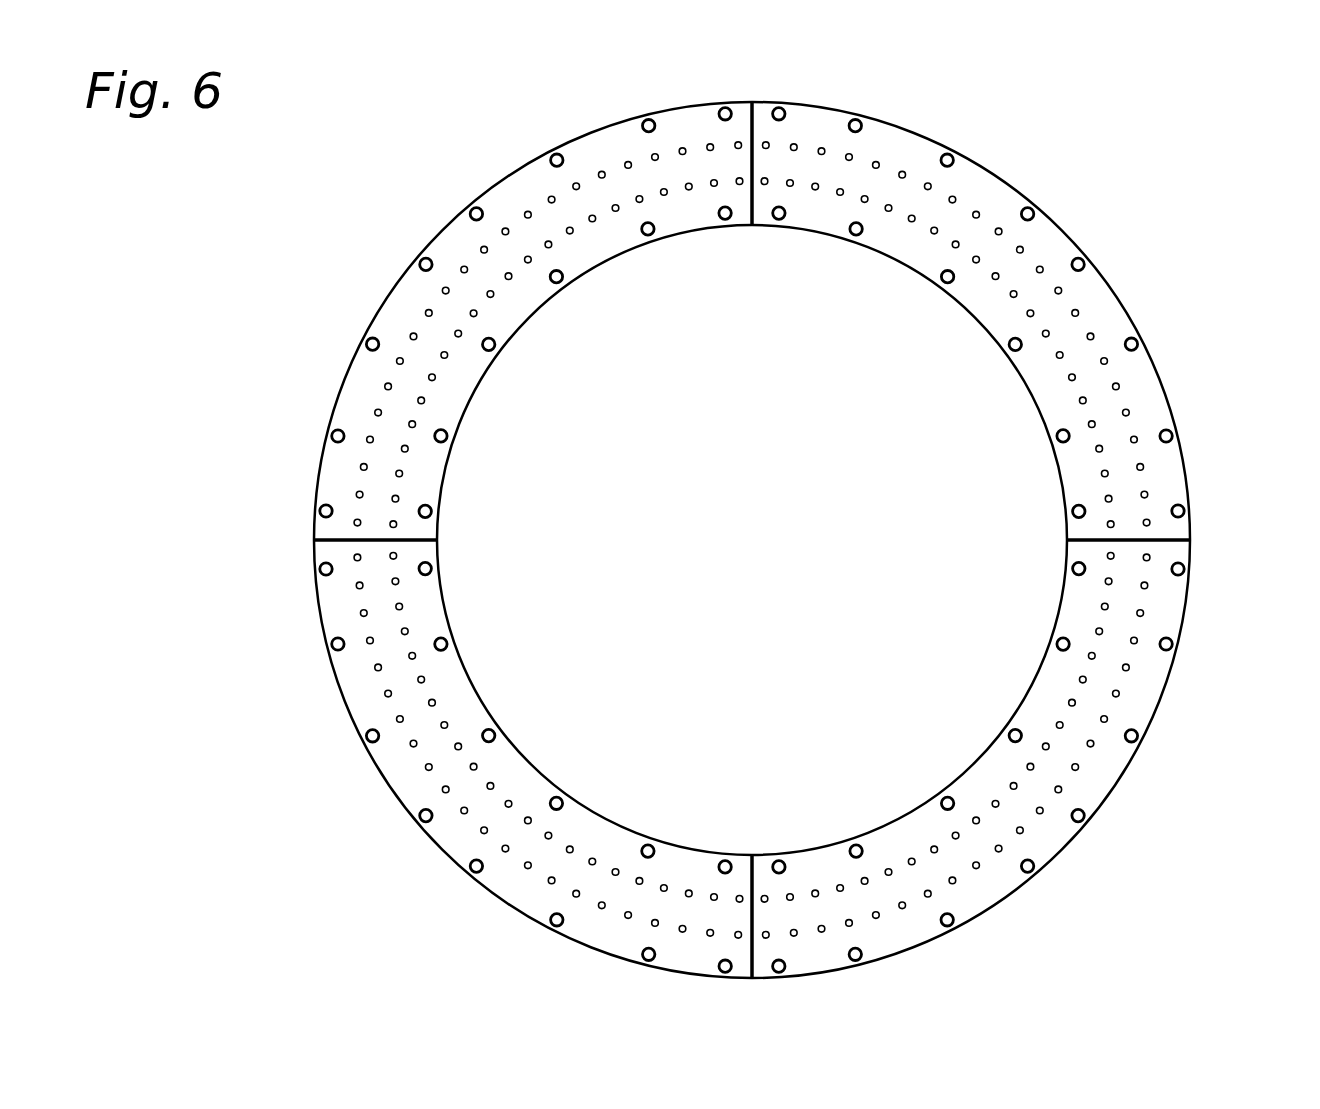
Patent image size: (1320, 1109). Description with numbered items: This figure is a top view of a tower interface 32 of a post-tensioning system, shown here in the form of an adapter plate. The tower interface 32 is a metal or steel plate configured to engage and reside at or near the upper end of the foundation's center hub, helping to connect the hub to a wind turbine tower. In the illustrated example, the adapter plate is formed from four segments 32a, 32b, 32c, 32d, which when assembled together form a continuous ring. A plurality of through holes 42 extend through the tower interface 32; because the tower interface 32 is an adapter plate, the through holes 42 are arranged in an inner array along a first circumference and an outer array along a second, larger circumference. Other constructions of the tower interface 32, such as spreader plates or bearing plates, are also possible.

The tower interface 32 is at (762, 540).
The segment 32a is at (1147, 380).
The segment 32b is at (1100, 770).
The segment 32c is at (522, 893).
The segment 32d is at (360, 385).
The through holes 42 is at (950, 157).